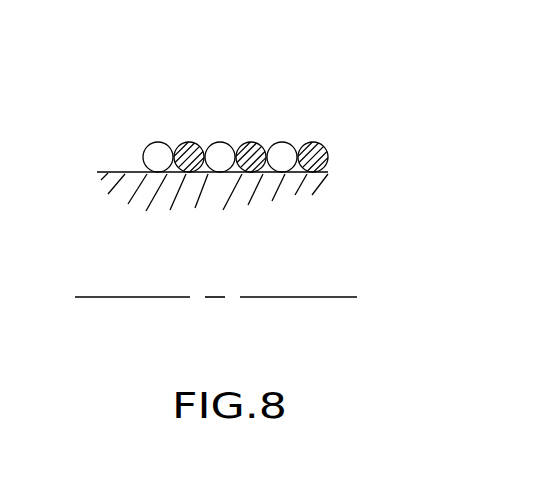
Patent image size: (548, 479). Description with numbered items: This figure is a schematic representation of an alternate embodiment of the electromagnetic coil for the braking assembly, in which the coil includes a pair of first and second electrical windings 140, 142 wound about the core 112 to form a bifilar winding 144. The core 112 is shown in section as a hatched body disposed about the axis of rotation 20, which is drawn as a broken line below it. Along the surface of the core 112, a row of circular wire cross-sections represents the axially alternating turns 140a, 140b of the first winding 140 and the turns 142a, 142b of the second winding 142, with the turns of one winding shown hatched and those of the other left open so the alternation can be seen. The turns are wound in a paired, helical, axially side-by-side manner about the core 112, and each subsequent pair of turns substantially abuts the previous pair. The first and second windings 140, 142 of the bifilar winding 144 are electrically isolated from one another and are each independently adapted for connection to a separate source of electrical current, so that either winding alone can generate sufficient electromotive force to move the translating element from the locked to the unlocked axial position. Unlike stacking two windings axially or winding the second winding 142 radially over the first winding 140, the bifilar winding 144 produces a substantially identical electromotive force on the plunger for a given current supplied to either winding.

The bifilar winding 144 is at (192, 80).
The first electrical winding 140 is at (322, 142).
The turn of the first winding 140a is at (328, 158).
The turn of the first winding 140b is at (251, 143).
The second electrical winding 142 is at (283, 143).
The turn of the second winding 142a is at (285, 172).
The turn of the second winding 142b is at (210, 171).
The core 112 is at (305, 197).
The axis of rotation 20 is at (122, 298).